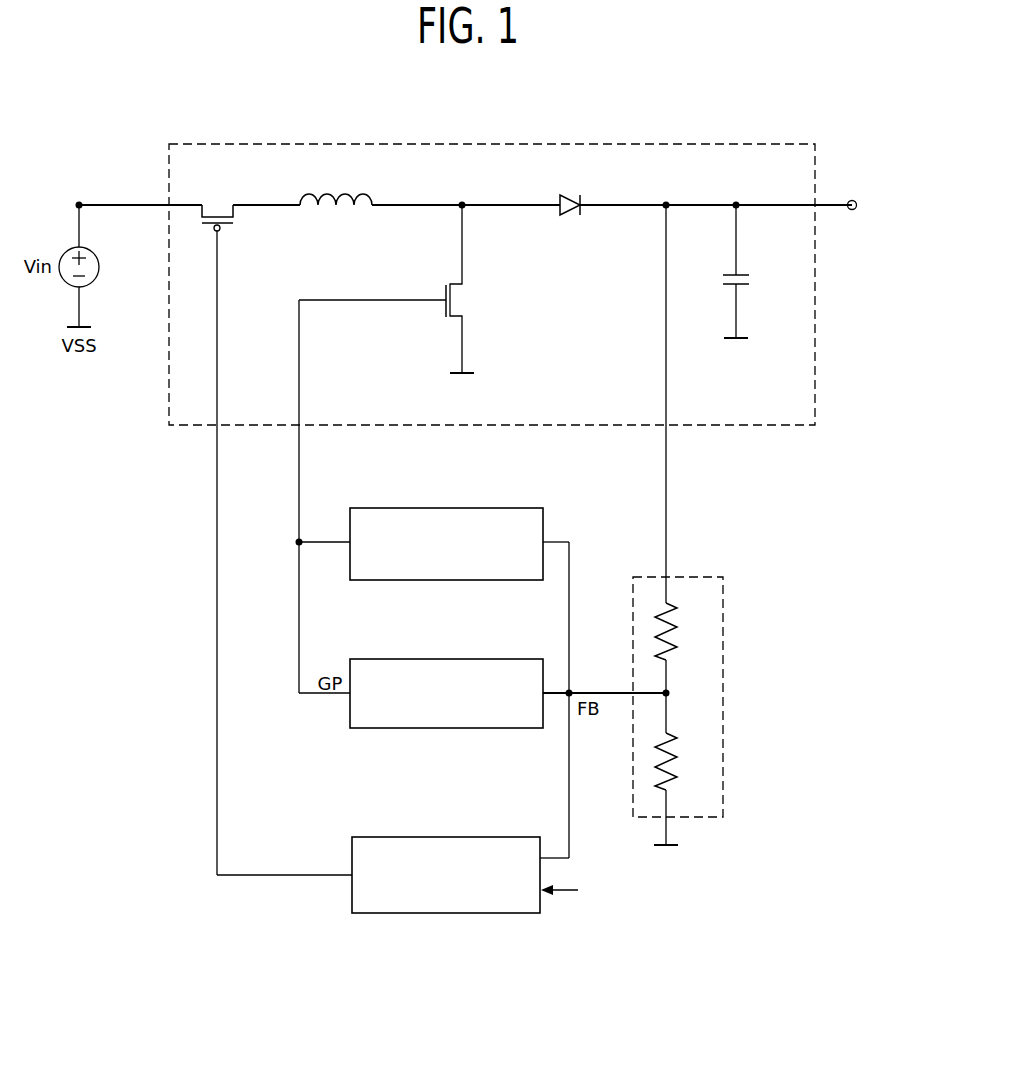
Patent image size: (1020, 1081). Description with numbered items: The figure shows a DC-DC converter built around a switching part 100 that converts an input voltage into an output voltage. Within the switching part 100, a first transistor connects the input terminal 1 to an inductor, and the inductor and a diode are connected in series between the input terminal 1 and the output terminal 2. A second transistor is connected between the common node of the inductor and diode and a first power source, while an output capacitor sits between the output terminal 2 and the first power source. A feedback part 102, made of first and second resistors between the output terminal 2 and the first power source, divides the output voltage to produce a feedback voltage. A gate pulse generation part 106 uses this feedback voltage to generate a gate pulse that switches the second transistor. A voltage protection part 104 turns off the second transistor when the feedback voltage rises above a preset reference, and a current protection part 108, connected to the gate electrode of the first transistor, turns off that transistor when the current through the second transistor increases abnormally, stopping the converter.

The input terminal 1 is at (79, 199).
The output terminal 2 is at (852, 199).
The switching part 100 is at (702, 144).
The feedback part 102 is at (705, 577).
The voltage protection part 104 is at (490, 508).
The gate pulse generation part 106 is at (490, 659).
The current protection part 108 is at (490, 837).